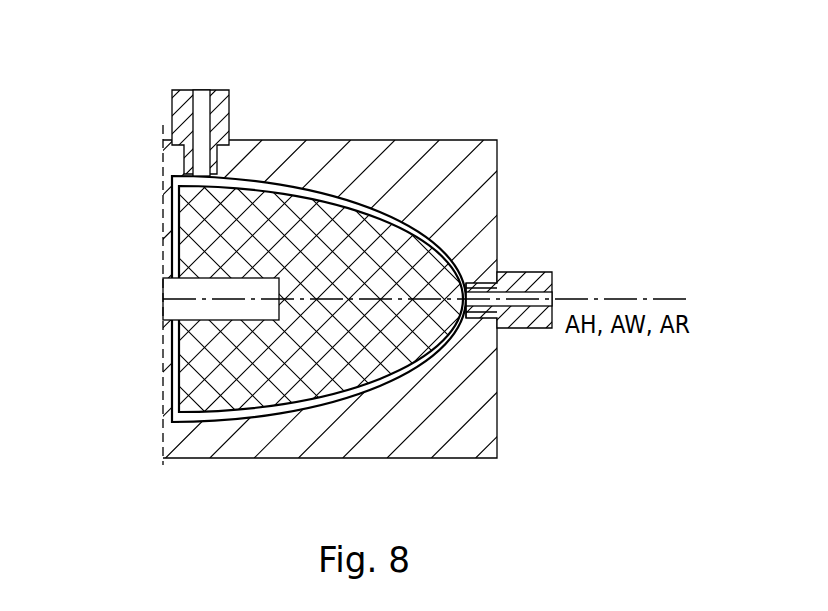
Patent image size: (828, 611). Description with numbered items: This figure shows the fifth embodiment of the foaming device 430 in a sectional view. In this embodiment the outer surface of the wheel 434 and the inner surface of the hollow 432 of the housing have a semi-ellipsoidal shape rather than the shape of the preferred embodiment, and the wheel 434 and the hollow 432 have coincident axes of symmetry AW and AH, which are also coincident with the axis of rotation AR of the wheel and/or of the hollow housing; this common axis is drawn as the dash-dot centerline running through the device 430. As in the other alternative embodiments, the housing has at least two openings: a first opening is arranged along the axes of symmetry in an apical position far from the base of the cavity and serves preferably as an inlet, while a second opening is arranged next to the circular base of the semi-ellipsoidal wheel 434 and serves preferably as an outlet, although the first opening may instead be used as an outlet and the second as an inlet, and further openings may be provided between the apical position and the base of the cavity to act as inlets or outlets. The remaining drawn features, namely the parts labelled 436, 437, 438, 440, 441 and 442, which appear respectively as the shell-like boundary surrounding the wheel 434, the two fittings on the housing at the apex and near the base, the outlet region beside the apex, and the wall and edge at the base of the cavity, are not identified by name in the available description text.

The dispensing unit 430 is at (509, 123).
The hollow 432 is at (330, 200).
The wheel 434 is at (370, 352).
The membrane shell 436 is at (272, 413).
The outlet fitting 437 is at (519, 296).
The inlet fitting 438 is at (202, 110).
The outlet opening 440 is at (465, 312).
The inner wall of membrane 441 is at (192, 223).
The membrane edge 442 is at (160, 412).